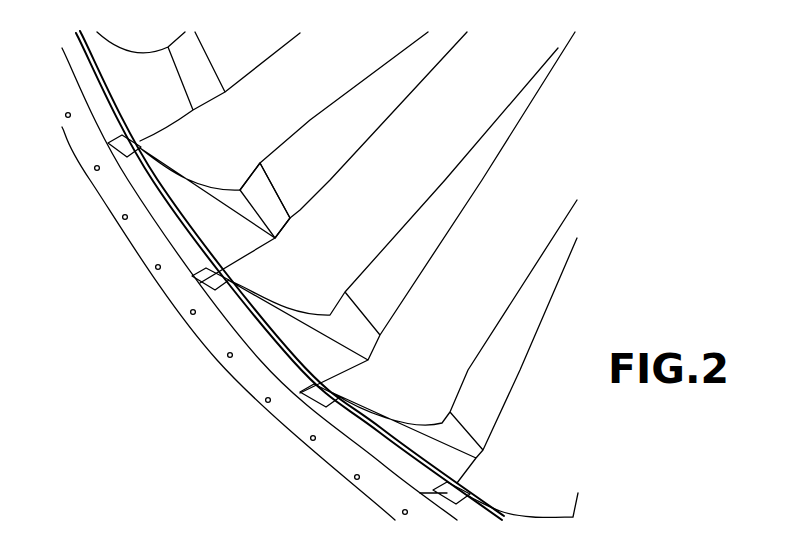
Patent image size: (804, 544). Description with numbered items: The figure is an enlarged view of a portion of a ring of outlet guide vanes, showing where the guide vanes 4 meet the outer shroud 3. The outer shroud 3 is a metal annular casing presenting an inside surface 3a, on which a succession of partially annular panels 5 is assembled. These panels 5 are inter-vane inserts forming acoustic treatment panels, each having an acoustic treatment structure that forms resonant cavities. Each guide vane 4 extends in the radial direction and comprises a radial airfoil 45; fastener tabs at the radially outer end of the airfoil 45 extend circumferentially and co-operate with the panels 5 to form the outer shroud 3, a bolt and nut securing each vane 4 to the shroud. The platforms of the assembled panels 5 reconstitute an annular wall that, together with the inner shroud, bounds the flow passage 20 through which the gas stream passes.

The outer shroud 3 is at (340, 460).
The inside surface 3a is at (198, 72).
The guide vane 4 is at (270, 268).
The acoustic treatment panel 5 is at (277, 323).
The flow passage 20 is at (282, 186).
The radial airfoil 45 is at (540, 193).